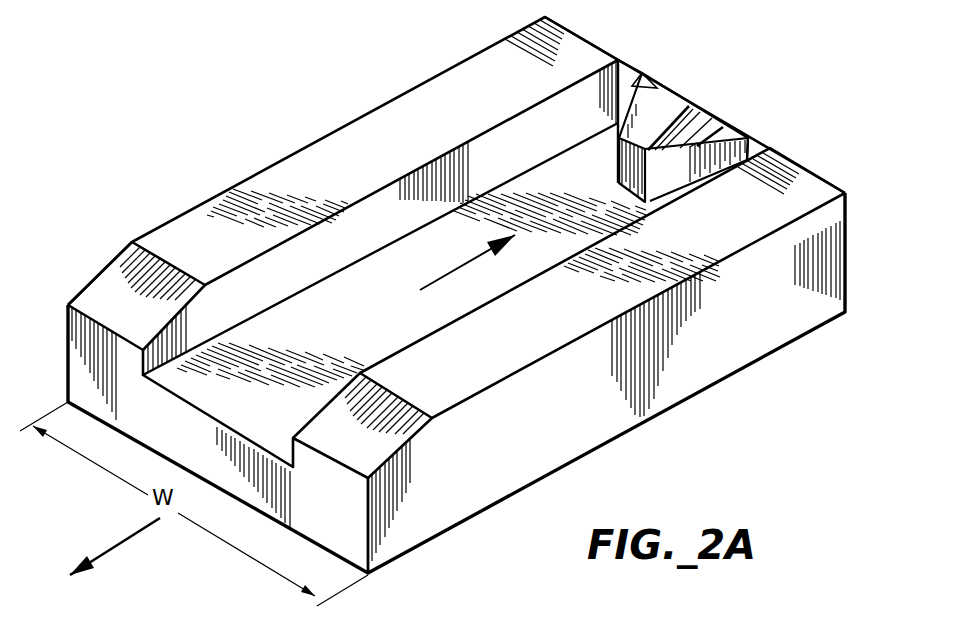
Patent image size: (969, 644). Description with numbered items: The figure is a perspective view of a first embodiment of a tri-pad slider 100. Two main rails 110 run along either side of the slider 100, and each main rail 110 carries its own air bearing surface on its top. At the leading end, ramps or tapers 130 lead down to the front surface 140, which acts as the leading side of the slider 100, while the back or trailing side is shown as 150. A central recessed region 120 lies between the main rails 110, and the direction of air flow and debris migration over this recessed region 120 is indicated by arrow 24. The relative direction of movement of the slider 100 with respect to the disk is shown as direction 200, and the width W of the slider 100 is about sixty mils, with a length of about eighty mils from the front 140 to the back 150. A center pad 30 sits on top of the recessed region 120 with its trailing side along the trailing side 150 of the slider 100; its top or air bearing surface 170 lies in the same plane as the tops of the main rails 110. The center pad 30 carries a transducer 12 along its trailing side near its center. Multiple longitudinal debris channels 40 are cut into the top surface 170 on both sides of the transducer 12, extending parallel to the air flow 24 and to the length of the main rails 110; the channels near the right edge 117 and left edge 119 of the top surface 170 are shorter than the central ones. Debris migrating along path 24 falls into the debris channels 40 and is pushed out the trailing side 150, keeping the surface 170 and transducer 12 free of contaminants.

The tri-pad slider 100 is at (673, 408).
The main rails 110 is at (383, 169).
The central recessed region 120 is at (393, 324).
The ramps or tapers 130 is at (160, 317).
The front surface 140 is at (198, 445).
The trailing side 150 is at (697, 108).
The center pad 30 is at (679, 177).
The debris channels 40 is at (689, 104).
The transducer 12 is at (700, 112).
The left edge 119 is at (626, 98).
The right edge 117 is at (749, 143).
The top surface 170 is at (619, 140).
The direction of air flow 24 is at (463, 264).
The direction of movement 200 is at (126, 541).